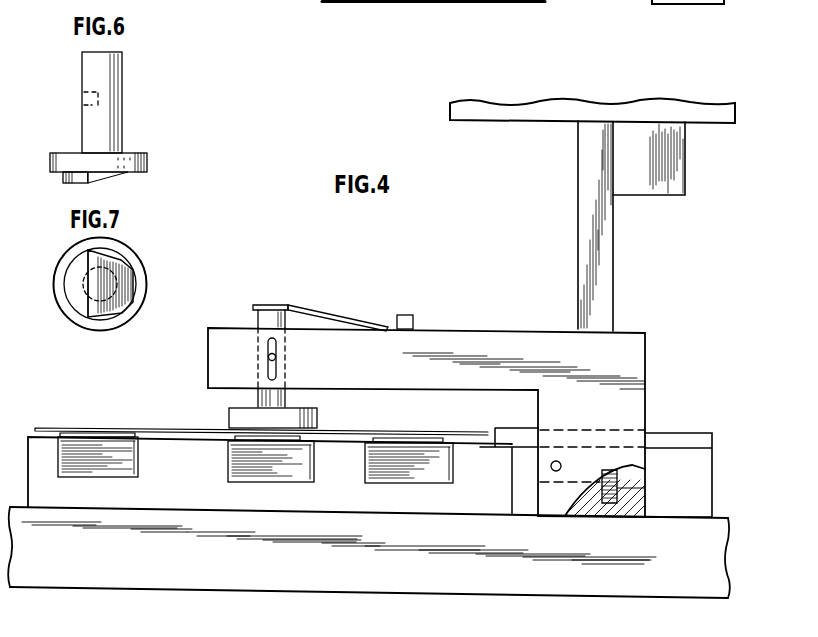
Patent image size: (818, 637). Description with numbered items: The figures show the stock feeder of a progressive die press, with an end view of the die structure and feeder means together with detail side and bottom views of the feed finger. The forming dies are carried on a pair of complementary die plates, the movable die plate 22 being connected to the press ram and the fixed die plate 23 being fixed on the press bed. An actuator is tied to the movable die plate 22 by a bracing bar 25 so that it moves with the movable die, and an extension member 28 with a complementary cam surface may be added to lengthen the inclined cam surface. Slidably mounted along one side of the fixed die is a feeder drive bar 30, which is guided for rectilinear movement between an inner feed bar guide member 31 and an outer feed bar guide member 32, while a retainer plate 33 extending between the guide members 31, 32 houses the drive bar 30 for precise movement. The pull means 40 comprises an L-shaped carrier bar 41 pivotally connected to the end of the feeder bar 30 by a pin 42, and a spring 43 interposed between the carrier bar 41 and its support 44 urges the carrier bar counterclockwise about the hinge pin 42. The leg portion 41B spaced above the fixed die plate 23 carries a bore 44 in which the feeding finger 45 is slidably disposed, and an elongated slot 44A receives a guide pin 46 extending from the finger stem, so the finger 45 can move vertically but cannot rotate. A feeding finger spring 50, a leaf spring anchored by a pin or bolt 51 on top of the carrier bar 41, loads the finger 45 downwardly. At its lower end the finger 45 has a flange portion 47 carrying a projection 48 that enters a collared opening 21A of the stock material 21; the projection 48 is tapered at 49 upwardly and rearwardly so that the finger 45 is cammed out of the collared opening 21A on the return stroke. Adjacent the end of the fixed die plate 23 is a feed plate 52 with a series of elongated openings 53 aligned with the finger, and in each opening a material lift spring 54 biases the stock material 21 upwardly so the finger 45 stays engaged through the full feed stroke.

In FIG. 4, the stock material 21 is at (153, 428).
In FIG. 4, the collared opening 21A is at (93, 430).
In FIG. 4, the movable die plate 22 is at (707, 115).
In FIG. 4, the fixed die plate 23 is at (707, 536).
In FIG. 4, the bracing bar 25 is at (666, 192).
In FIG. 4, the extension member 28 is at (593, 253).
In FIG. 4, the feeder drive bar 30 is at (633, 472).
In FIG. 4, the inner feed bar guide member 31 is at (512, 488).
In FIG. 4, the outer feed bar guide member 32 is at (705, 456).
In FIG. 4, the retainer plate 33 is at (660, 432).
In FIG. 4, the pull means 40 is at (504, 324).
In FIG. 4, the carrier bar 41 is at (442, 348).
In FIG. 4, the leg portion of carrier bar 41B is at (322, 340).
In FIG. 4, the pin 42 is at (556, 460).
In FIG. 4, the spring 43 is at (620, 488).
In FIG. 4, the bore 44 is at (258, 340).
In FIG. 4, the elongated slot 44A is at (276, 365).
In FIG. 6, the feeding finger 45 is at (93, 125).
In FIG. 4, the feeding finger 45 is at (270, 399).
In FIG. 4, the guide pin 46 is at (268, 357).
In FIG. 6, the flange portion 47 is at (147, 160).
In FIG. 7, the flange portion 47 is at (147, 294).
In FIG. 4, the flange portion 47 is at (312, 421).
In FIG. 6, the projection 48 is at (73, 180).
In FIG. 7, the projection 48 is at (72, 280).
In FIG. 6, the taper 49 is at (108, 177).
In FIG. 7, the taper 49 is at (118, 268).
In FIG. 4, the feeding finger spring 50 is at (413, 318).
In FIG. 4, the pin or bolt 51 is at (408, 322).
In FIG. 4, the feed plate 52 is at (286, 508).
In FIG. 4, the elongated openings 53 is at (227, 460).
In FIG. 4, the material lift spring 54 is at (100, 457).